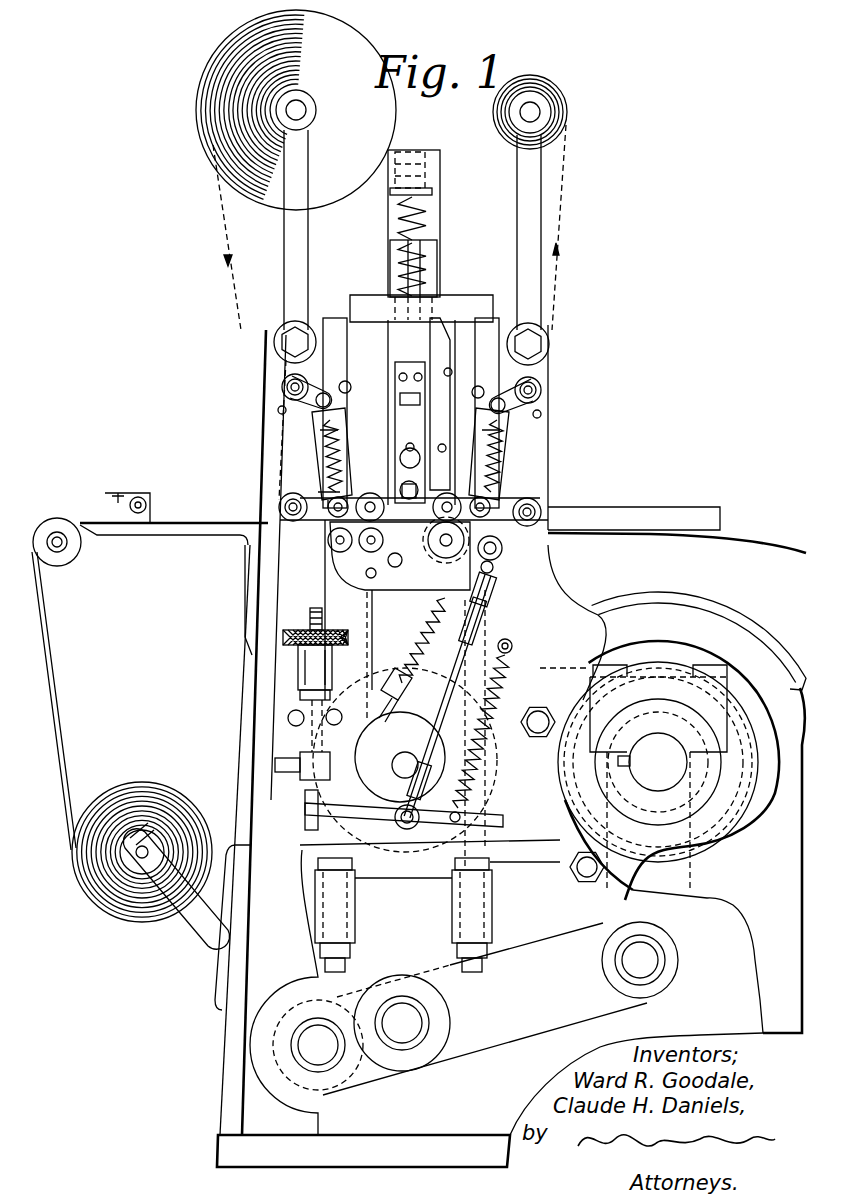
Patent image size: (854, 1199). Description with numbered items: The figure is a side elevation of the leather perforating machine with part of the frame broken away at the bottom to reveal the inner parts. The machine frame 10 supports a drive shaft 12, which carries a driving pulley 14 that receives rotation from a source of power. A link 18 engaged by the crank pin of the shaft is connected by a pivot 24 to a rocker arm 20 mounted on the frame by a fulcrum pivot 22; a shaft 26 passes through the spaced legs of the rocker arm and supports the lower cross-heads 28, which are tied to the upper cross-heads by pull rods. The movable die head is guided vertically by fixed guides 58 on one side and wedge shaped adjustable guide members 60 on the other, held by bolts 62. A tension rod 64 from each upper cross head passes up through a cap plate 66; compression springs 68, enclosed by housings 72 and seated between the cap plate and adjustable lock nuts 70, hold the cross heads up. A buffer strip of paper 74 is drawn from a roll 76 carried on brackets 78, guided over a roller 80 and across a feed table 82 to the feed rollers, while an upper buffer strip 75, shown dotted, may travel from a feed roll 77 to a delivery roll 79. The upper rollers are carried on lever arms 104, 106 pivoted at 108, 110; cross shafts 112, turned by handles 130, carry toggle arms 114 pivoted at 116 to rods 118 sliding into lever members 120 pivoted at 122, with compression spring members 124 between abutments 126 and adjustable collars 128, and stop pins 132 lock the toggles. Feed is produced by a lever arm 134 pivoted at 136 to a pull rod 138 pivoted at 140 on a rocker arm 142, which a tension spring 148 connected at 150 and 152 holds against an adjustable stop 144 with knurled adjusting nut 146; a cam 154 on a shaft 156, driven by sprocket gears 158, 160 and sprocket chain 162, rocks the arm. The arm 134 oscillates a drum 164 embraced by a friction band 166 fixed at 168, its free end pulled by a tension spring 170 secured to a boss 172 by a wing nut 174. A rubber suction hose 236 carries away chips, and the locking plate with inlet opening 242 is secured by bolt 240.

The machine frame 10 is at (252, 700).
The drive shaft 12 is at (649, 776).
The driving pulley 14 is at (740, 628).
The link 18 is at (665, 915).
The rocker arm 20 is at (572, 1022).
The fulcrum pivot 22 is at (332, 1057).
The pivot 24 is at (652, 970).
The shaft 26 is at (420, 1025).
The lower cross-heads 28 is at (393, 971).
The fixed guides 58 is at (392, 424).
The adjustable guide members 60 is at (433, 362).
The bolts 62 is at (451, 370).
The tension rod 64 is at (430, 256).
The cap plate 66 is at (471, 298).
The compression springs 68 is at (430, 238).
The adjustable lock nuts 70 is at (442, 162).
The housings 72 is at (440, 193).
The buffer strip of paper 74 is at (65, 600).
The upper buffer strip 75 is at (235, 318).
The roll 76 is at (170, 822).
The feed roll 77 is at (215, 127).
The brackets 78 is at (183, 915).
The delivery roll 79 is at (567, 115).
The roller 80 is at (78, 548).
The feed table 82 is at (205, 535).
The lever arm 104 is at (318, 525).
The lever arm 106 is at (550, 478).
The pivot 108 is at (278, 507).
The pivot 110 is at (549, 512).
The cross shafts 112 is at (282, 387).
The toggle arms 114 is at (310, 397).
The pivot 116 is at (318, 430).
The rods 118 is at (505, 452).
The lever members 120 is at (326, 455).
The pivot 122 is at (345, 522).
The compression spring members 124 is at (338, 480).
The abutments 126 is at (338, 490).
The adjustable collars 128 is at (350, 432).
The handles 130 is at (282, 350).
The stop pins 132 is at (278, 410).
The lever arm 134 is at (478, 582).
The pivot 136 is at (503, 552).
The pull rod 138 is at (482, 616).
The pivot 140 is at (408, 864).
The rocker arm 142 is at (395, 817).
The adjustable stop 144 is at (310, 790).
The knurled adjusting nut 146 is at (306, 628).
The tension spring 148 is at (512, 658).
The connection 150 is at (460, 815).
The connection 152 is at (507, 639).
The cam 154 is at (400, 766).
The shaft 156 is at (413, 750).
The sprocket gear 158 is at (505, 776).
The sprocket gear 160 is at (712, 855).
The sprocket chain 162 is at (430, 880).
The drum 164 is at (438, 633).
The friction band 166 is at (444, 556).
The fixing point 168 is at (412, 548).
The tension spring 170 is at (436, 610).
The boss 172 is at (402, 666).
The wing nut 174 is at (394, 690).
The rubber suction hose 236 is at (404, 449).
The bolt 240 is at (400, 466).
The inlet opening 242 is at (410, 500).